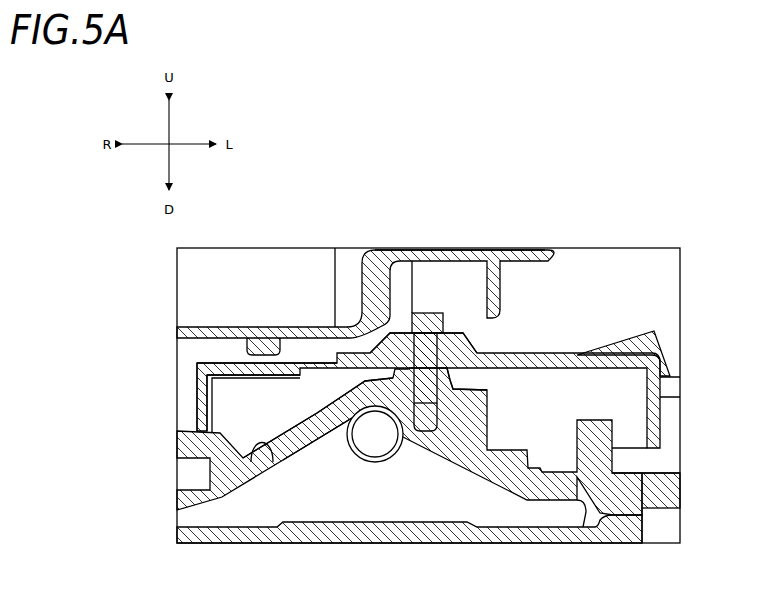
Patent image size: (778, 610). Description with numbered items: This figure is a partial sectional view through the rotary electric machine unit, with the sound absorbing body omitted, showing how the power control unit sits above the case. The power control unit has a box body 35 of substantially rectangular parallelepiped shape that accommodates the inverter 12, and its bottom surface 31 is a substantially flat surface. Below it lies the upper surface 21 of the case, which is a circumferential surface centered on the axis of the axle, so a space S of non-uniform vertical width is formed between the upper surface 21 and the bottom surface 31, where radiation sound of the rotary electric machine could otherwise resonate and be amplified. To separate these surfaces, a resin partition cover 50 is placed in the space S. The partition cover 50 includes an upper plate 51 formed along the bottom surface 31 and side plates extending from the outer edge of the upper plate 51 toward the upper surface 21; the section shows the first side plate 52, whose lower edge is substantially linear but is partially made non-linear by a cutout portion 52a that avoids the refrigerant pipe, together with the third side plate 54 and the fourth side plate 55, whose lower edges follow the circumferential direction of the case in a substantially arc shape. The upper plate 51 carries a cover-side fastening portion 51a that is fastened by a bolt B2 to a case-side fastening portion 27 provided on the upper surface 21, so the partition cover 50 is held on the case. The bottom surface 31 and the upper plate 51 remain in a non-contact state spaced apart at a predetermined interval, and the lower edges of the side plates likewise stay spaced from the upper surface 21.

The inverter 12 is at (250, 273).
The bottom surface 31 is at (313, 336).
The box body 35 is at (495, 253).
The bolt B2 is at (412, 261).
The partition cover 50 is at (548, 357).
The upper plate 51 is at (0, 0).
The cover-side fastening portion 51a is at (468, 352).
The third side plate 54 is at (197, 392).
The space S is at (195, 350).
The fourth side plate 55 is at (663, 425).
The cutout portion 52a is at (332, 447).
The first side plate 52 is at (547, 420).
The upper surface 21 is at (251, 447).
The case-side fastening portion 27 is at (478, 372).